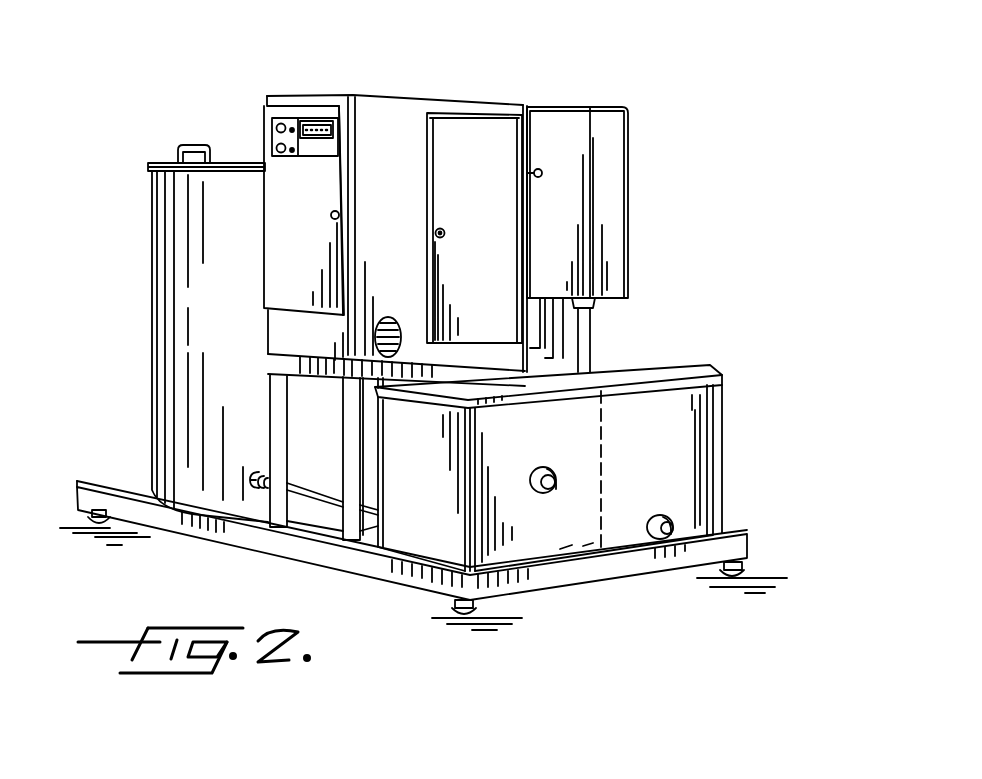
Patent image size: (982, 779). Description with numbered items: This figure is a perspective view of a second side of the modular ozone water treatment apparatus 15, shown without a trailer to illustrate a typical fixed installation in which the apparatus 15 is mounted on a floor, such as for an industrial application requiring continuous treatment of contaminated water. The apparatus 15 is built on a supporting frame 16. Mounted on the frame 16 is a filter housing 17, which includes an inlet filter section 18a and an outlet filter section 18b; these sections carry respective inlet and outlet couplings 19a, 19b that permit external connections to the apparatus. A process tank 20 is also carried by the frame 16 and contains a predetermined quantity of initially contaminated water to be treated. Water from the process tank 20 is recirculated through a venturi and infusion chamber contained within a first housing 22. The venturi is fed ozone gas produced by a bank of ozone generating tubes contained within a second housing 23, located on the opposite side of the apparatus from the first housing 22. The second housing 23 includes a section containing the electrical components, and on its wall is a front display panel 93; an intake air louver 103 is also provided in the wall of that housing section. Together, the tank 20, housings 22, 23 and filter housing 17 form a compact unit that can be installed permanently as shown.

The modular ozone water treatment apparatus 15 is at (704, 128).
The supporting frame 16 is at (750, 549).
The filter housing 17 is at (652, 367).
The inlet filter section 18a is at (417, 532).
The outlet filter section 18b is at (705, 418).
The inlet coupling 19a is at (543, 493).
The outlet coupling 19b is at (673, 522).
The process tank 20 is at (162, 270).
The first housing 22 is at (612, 210).
The second housing 23 is at (389, 100).
The front display panel 93 is at (279, 132).
The intake air louver 103 is at (398, 322).